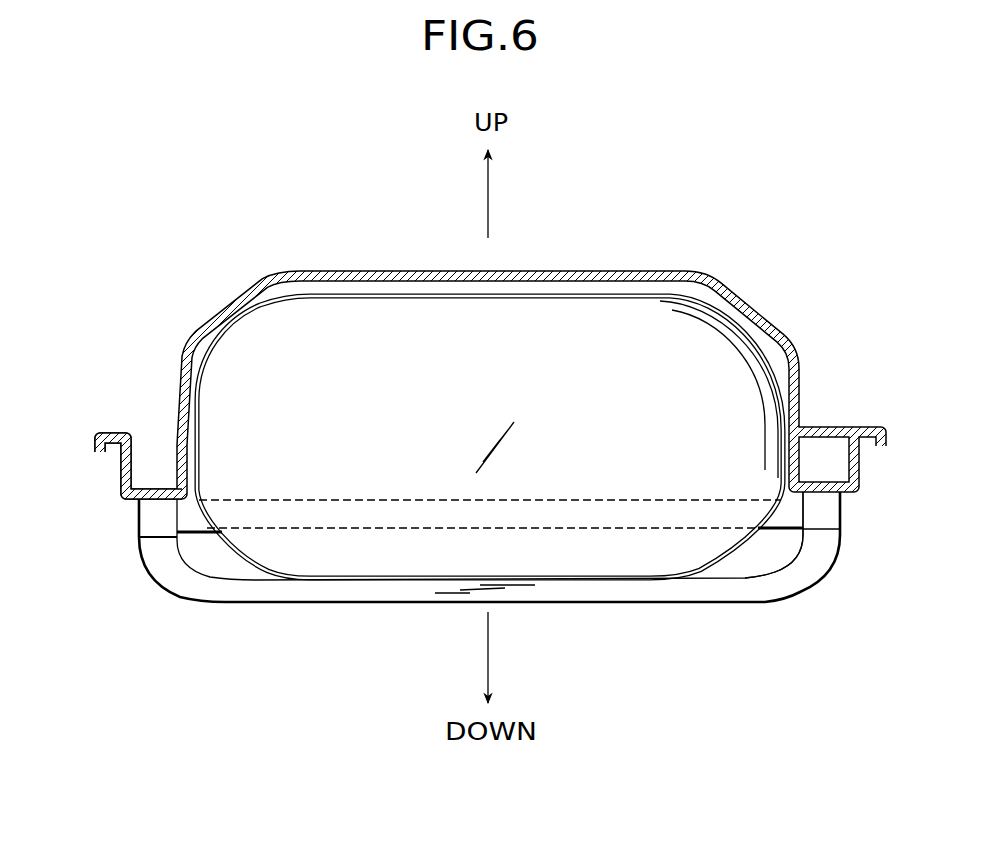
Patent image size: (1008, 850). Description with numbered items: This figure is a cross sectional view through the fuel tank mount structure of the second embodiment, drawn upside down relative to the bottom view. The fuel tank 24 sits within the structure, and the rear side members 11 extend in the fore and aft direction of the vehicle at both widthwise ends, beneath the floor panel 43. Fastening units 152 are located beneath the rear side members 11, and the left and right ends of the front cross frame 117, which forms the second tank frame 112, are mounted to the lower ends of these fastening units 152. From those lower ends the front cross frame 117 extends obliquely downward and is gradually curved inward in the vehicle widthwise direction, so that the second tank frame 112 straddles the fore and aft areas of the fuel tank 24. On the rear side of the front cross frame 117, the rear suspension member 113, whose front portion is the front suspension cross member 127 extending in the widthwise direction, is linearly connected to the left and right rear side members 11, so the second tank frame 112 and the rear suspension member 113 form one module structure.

The floor panel 43 is at (372, 260).
The fuel tank 24 is at (503, 328).
The rear side member 11 is at (121, 470).
The fastening unit 152 is at (158, 527).
The second tank frame 112 is at (489, 615).
The front cross frame 117 is at (312, 613).
The rear suspension member 113 is at (801, 574).
The front suspension cross member 127 is at (775, 540).